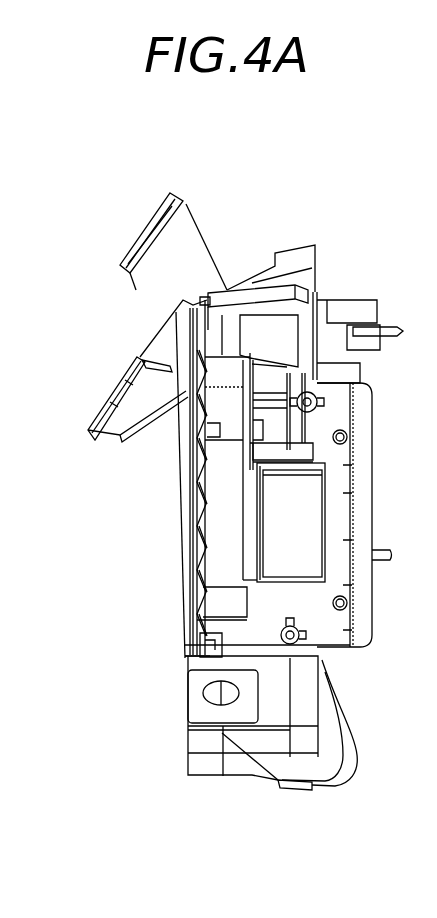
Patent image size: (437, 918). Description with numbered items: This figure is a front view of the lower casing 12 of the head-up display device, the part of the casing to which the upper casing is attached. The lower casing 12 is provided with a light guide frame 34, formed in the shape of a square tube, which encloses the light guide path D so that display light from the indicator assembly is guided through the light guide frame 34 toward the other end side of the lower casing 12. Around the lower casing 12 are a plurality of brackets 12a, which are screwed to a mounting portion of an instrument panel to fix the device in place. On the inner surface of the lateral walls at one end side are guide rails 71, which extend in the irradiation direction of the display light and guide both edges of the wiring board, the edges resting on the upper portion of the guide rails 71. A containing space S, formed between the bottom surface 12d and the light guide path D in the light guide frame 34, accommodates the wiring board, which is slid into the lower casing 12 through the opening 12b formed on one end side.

The lower casing 12 is at (187, 735).
The bracket 12a is at (178, 192).
The opening 12b is at (296, 327).
The bottom surface 12d is at (183, 535).
The guide rail 71 is at (205, 298).
The light guide frame 34 is at (302, 585).
The containing space S is at (230, 511).
The light guide path D is at (300, 527).